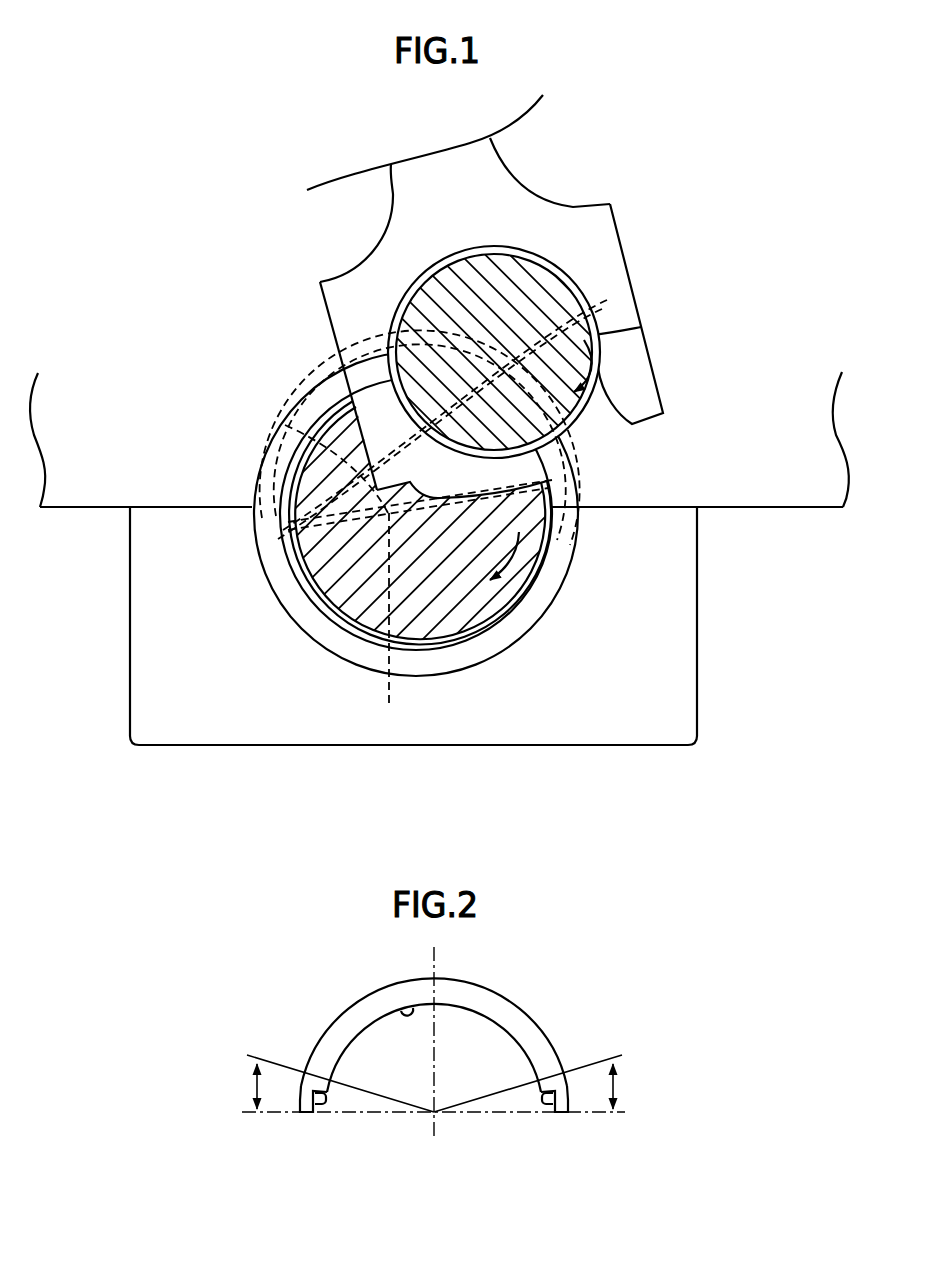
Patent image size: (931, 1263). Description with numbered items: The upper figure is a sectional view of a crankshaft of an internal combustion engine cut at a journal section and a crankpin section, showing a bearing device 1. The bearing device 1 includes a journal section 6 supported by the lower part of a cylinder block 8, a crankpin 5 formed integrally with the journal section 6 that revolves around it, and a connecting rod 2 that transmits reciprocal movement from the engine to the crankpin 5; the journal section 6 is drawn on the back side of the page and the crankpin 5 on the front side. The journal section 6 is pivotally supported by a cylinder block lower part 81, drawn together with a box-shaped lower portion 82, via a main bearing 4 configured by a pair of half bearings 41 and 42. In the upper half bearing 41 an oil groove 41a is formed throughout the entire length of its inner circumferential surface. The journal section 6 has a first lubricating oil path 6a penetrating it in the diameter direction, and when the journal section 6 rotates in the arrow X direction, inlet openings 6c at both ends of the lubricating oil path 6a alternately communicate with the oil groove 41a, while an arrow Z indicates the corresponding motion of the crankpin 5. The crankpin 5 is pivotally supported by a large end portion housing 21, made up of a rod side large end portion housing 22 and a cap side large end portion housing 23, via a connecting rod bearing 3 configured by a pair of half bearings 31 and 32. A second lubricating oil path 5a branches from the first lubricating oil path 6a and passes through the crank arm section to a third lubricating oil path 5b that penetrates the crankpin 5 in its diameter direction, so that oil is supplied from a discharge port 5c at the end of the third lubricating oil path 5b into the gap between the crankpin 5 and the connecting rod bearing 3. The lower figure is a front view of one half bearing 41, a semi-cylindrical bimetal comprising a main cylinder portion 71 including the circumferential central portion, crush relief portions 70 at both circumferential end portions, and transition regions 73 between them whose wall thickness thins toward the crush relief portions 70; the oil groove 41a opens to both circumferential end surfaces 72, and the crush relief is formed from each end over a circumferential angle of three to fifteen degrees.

In FIG. 1, the bearing device 1 is at (128, 212).
In FIG. 1, the connecting rod 2 is at (392, 194).
In FIG. 1, the large end portion housing 21 is at (551, 323).
In FIG. 1, the rod side large end portion housing 22 is at (631, 277).
In FIG. 1, the cap side large end portion housing 23 is at (651, 359).
In FIG. 1, the connecting rod bearing 3 is at (608, 377).
In FIG. 1, the half bearing 31 is at (452, 262).
In FIG. 1, the half bearing 32 is at (570, 455).
In FIG. 1, the main bearing 4 is at (328, 514).
In FIG. 1, the half bearing 41 is at (246, 441).
In FIG. 2, the half bearing 41 is at (434, 1053).
In FIG. 1, the oil groove 41a is at (278, 488).
In FIG. 1, the half bearing 42 is at (267, 565).
In FIG. 1, the crankpin 5 is at (517, 281).
In FIG. 1, the second lubricating oil path 5a is at (285, 425).
In FIG. 1, the third lubricating oil path 5b is at (592, 352).
In FIG. 1, the discharge port 5c is at (590, 301).
In FIG. 1, the journal section 6 is at (337, 597).
In FIG. 1, the lubricating oil path 6a is at (387, 623).
In FIG. 1, the inlet opening 6c is at (280, 528).
In FIG. 1, the cylinder block 8 is at (441, 619).
In FIG. 1, the cylinder block lower part 81 is at (752, 493).
In FIG. 1, the box body 82 is at (697, 680).
In FIG. 2, the crush relief portion 70 is at (313, 1096).
In FIG. 2, the main cylinder portion 71 is at (410, 1009).
In FIG. 2, the end surface 72 is at (306, 1112).
In FIG. 2, the transition region 73 is at (333, 1076).
In FIG. 1, the arrow X direction X is at (508, 560).
In FIG. 1, the rotation direction of first roller Z is at (600, 392).